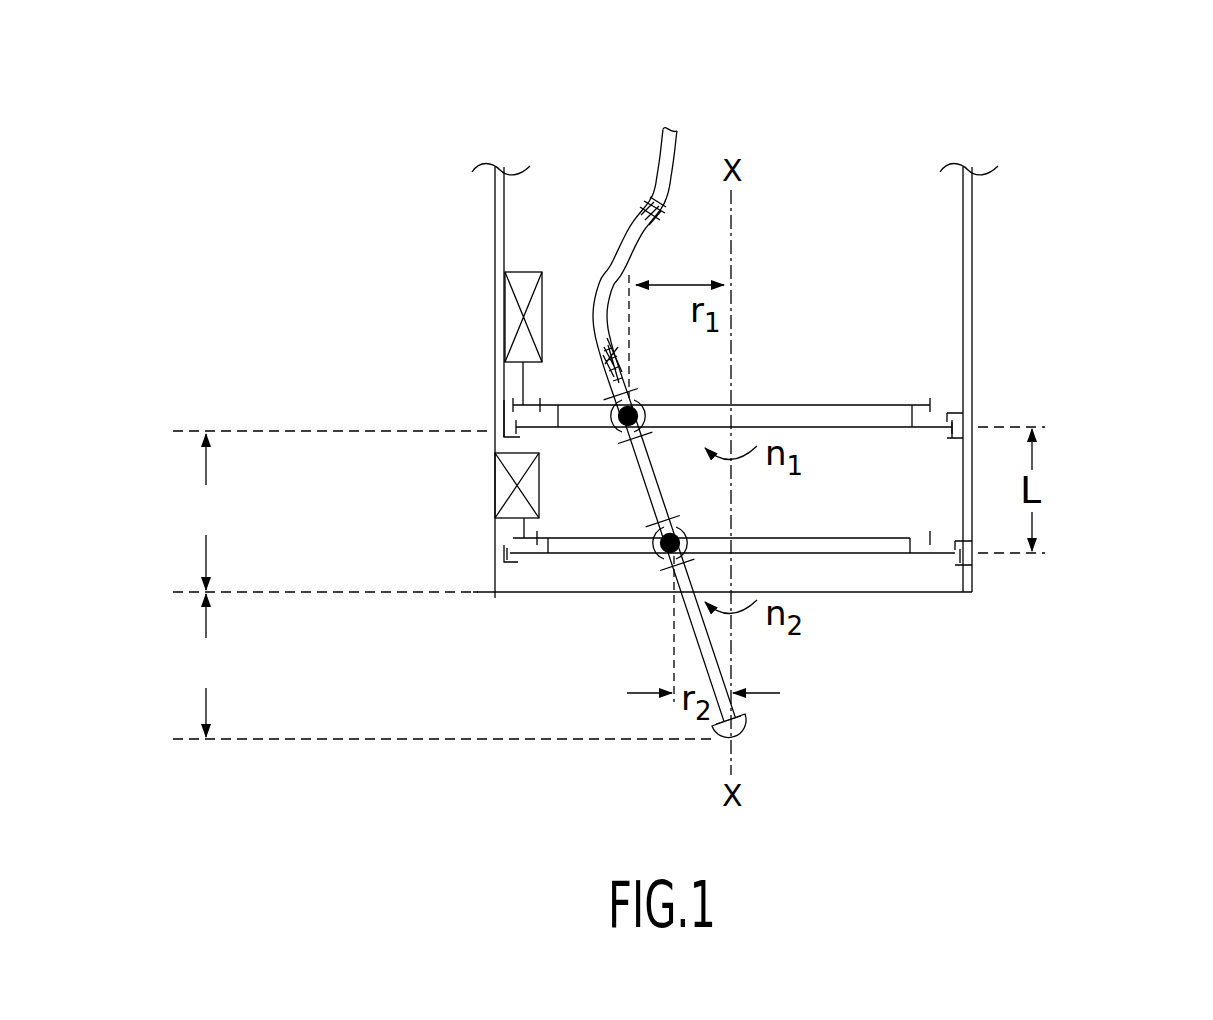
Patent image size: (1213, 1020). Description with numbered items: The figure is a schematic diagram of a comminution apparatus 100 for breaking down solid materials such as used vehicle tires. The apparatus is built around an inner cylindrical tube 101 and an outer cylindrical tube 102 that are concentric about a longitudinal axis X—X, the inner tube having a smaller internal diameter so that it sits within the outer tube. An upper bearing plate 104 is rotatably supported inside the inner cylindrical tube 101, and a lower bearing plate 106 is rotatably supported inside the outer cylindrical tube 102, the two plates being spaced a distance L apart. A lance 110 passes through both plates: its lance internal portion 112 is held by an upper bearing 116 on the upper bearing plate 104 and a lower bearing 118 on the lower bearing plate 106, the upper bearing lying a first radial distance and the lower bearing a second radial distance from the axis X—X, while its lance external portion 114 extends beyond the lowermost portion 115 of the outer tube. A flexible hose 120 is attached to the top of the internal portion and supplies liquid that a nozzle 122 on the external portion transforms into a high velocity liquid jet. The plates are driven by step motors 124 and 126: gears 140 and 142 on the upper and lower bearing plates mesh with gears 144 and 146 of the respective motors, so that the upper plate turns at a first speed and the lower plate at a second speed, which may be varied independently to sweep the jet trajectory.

The comminution apparatus 100 is at (1056, 138).
The inner cylindrical tube 101 is at (965, 310).
The outer cylindrical tube 102 is at (503, 410).
The upper bearing plate 104 is at (880, 427).
The lower bearing plate 106 is at (882, 553).
The lance 110 is at (652, 485).
The lance internal portion 112 is at (206, 512).
The lance external portion 114 is at (206, 665).
The lowermost portion of cylindrical tube 115 is at (495, 600).
The upper bearing 116 is at (643, 398).
The lower bearing 118 is at (688, 532).
The flexible hose 120 is at (610, 266).
The nozzle 122 is at (745, 728).
The step motor 124 is at (497, 306).
The step motor 126 is at (495, 488).
The gear 140 is at (920, 406).
The gear 142 is at (955, 568).
The gear 144 is at (517, 397).
The gear 146 is at (495, 522).